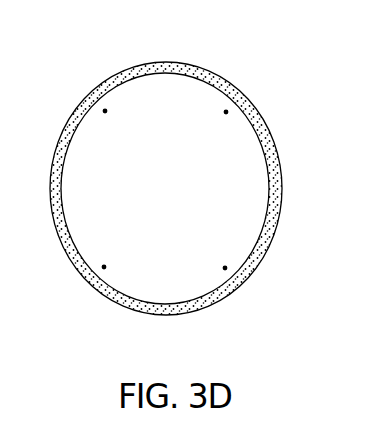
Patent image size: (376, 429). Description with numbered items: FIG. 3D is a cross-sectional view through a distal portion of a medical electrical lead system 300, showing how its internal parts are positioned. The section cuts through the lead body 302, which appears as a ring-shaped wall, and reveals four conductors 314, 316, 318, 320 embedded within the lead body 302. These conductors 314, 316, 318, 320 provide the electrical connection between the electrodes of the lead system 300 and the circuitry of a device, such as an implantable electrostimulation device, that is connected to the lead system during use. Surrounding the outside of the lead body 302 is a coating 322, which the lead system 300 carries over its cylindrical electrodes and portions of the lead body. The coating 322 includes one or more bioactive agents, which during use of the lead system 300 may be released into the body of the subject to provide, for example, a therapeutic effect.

The medical electrical lead system 300 is at (185, 183).
The lead body 302 is at (283, 173).
The conductor 314 is at (104, 110).
The conductor 316 is at (226, 112).
The conductor 318 is at (225, 269).
The conductor 320 is at (104, 269).
The coating 322 is at (253, 108).